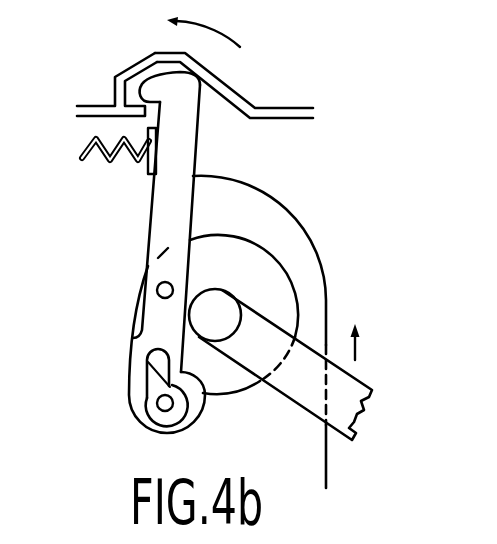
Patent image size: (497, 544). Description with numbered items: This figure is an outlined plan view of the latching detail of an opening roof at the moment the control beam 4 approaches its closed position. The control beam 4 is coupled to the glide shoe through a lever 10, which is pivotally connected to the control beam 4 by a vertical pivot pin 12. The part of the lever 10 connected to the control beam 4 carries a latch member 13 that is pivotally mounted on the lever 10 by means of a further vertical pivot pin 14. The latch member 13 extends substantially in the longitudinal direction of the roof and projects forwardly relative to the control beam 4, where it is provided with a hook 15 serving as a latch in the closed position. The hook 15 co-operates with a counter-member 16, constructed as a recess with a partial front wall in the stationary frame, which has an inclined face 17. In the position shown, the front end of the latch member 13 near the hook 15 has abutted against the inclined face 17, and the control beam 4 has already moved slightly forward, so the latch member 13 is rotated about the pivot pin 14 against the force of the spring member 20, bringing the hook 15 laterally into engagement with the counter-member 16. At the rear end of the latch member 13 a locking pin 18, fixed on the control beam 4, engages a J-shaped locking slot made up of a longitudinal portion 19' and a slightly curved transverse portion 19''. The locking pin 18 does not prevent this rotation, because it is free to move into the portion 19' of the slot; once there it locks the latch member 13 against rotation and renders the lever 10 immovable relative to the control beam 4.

The control beam 4 is at (250, 196).
The lever 10 is at (300, 333).
The vertical pivot pin 12 is at (305, 247).
The latch member 13 is at (200, 148).
The vertical pivot pin 14 is at (160, 280).
The hook 15 is at (163, 88).
The counter-member 16 is at (139, 101).
The inclined face 17 is at (240, 93).
The locking pin 18 is at (157, 403).
The slot portion 19' is at (123, 373).
The slot portion 19'' is at (197, 415).
The spring member 20 is at (90, 147).